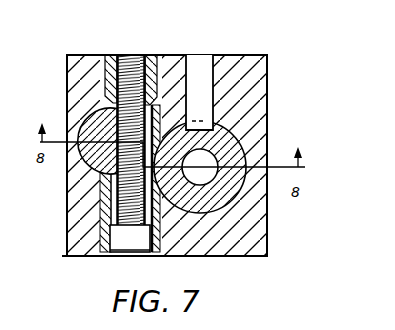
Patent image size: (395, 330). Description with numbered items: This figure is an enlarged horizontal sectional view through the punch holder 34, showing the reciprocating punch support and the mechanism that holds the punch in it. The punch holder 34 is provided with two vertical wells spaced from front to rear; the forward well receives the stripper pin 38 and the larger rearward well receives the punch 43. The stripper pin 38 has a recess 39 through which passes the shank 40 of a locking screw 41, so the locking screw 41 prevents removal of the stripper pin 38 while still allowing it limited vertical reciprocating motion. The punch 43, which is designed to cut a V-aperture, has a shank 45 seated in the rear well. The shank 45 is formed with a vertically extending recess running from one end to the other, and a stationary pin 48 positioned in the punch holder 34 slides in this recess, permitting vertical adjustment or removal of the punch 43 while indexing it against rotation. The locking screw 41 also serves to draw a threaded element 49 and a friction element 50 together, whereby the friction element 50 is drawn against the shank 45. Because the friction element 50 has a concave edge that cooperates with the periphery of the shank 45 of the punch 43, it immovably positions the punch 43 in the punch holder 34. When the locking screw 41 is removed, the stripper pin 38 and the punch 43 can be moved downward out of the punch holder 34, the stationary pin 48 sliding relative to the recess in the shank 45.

The punch holder 34 is at (267, 83).
The stripper pin 38 is at (92, 115).
The recess 39 is at (112, 128).
The shank 40 is at (108, 200).
The locking screw 41 is at (132, 240).
The punch 43 is at (247, 145).
The shank 45 is at (236, 136).
The stationary pin 48 is at (208, 63).
The threaded element 49 is at (152, 58).
The friction element 50 is at (103, 256).